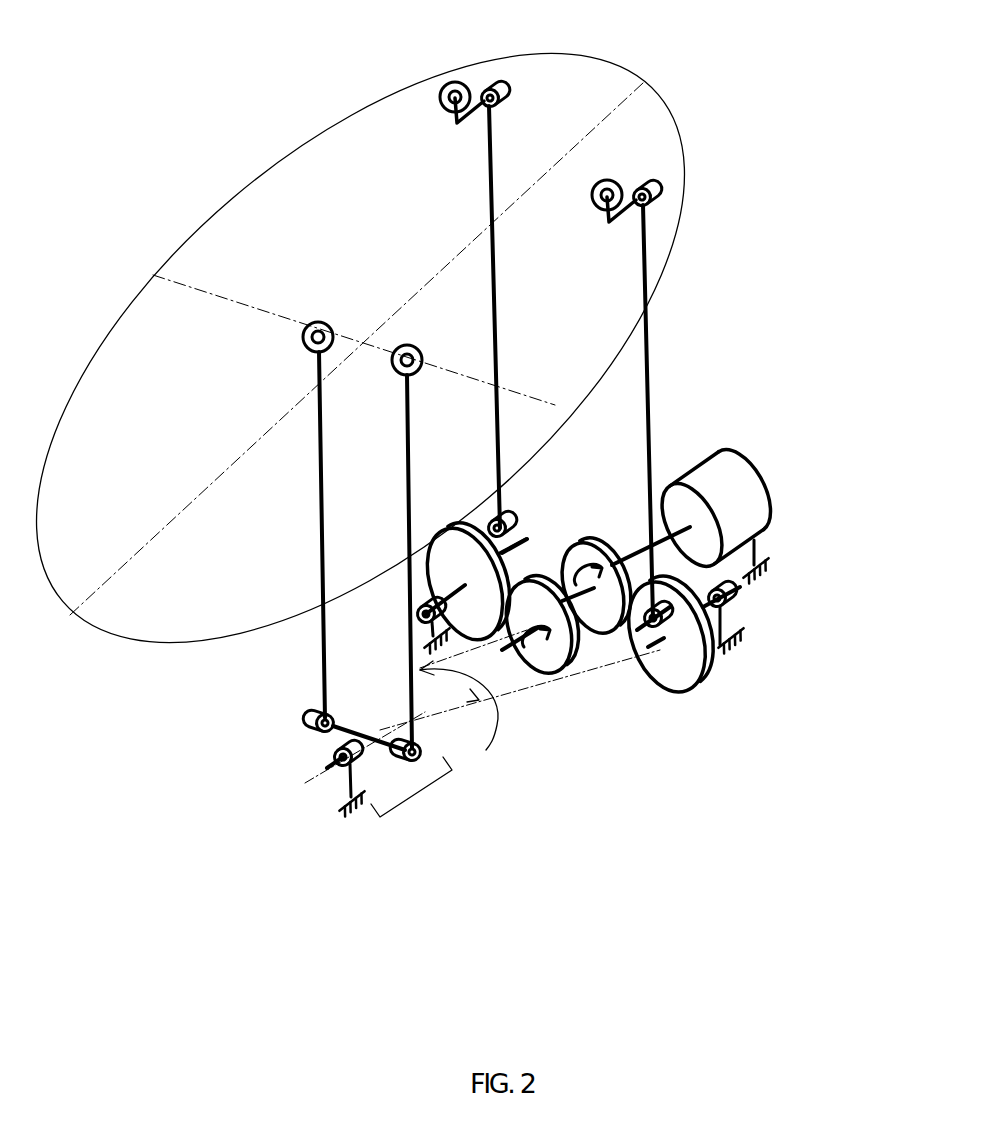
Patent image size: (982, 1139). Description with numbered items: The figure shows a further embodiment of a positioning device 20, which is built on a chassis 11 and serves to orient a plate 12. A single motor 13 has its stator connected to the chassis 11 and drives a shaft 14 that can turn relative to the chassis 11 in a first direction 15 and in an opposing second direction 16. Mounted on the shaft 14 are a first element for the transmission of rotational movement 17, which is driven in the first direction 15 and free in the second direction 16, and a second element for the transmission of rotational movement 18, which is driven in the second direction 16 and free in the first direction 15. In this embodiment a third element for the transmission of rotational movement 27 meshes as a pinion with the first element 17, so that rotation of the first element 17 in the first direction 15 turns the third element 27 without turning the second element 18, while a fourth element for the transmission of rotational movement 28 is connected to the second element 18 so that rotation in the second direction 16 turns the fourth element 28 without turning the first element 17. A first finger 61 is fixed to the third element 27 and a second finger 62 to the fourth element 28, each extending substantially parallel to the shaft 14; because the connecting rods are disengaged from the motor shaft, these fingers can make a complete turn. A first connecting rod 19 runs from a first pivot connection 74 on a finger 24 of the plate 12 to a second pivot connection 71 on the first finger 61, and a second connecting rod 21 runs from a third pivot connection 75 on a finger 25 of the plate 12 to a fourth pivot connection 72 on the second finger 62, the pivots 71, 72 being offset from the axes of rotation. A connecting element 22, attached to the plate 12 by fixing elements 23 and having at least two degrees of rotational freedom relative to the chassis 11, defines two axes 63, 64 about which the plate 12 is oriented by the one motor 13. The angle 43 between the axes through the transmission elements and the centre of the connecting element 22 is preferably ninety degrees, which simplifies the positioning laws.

The positioning device 20 is at (156, 97).
The plate 12 is at (684, 155).
The finger 24 is at (451, 82).
The first pivot connection 74 is at (483, 88).
The first connecting rod 19 is at (493, 262).
The finger 25 is at (615, 180).
The third pivot connection 75 is at (640, 187).
The second connecting rod 21 is at (650, 385).
The fixing elements 23 is at (407, 345).
The connecting element 22 is at (416, 794).
The axis of the connecting element 63 is at (340, 720).
The axis of the connecting element 64 is at (323, 757).
The third element for the transmission of rotational movement 27 is at (445, 530).
The second pivot connection 71 is at (514, 526).
The first finger 61 is at (516, 518).
The motor 13 is at (755, 500).
The shaft 14 is at (632, 555).
The second direction 16 is at (600, 545).
The first element for the transmission of rotational movement 17 is at (568, 660).
The first direction 15 is at (540, 662).
The second element for the transmission of rotational movement 18 is at (606, 637).
The chassis 11 is at (762, 555).
The fourth element for the transmission of rotational movement 28 is at (720, 664).
The second finger 62 is at (655, 640).
The fourth pivot connection 72 is at (678, 630).
The angle 43 is at (490, 732).